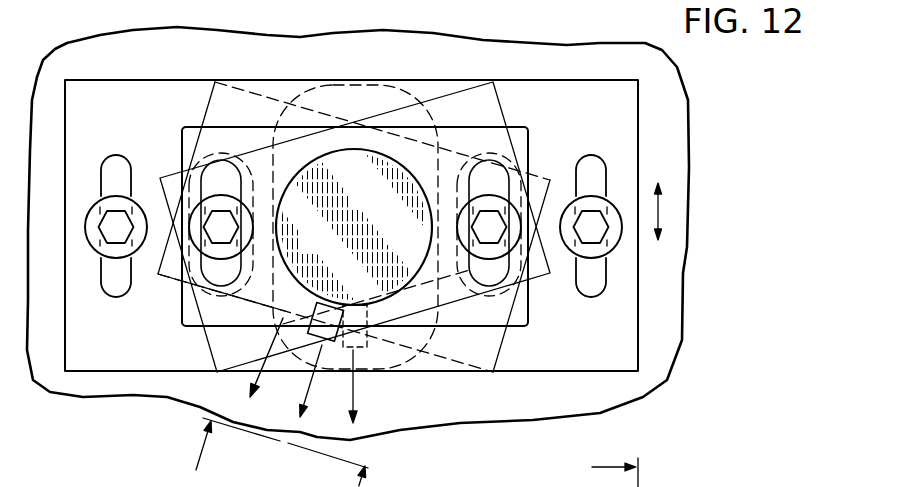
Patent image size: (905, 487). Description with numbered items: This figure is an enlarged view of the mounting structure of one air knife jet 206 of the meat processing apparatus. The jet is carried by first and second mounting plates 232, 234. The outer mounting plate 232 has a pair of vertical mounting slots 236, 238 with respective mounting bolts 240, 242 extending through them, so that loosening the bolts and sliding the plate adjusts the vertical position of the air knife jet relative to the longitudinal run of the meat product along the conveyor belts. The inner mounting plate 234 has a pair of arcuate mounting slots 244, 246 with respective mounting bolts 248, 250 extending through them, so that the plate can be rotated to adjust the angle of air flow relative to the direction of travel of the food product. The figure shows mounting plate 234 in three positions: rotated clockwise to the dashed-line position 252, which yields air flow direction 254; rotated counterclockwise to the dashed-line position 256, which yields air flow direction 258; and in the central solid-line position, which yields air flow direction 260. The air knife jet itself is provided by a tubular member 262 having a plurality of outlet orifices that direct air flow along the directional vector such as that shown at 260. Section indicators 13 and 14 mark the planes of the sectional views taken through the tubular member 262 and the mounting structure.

The adjustable mounting assembly 206 is at (361, 68).
The first mounting plate 232 is at (120, 82).
The second mounting plate 234 is at (182, 133).
The vertical mounting slot 236 is at (106, 172).
The vertical mounting slot 238 is at (590, 168).
The mounting bolt 240 is at (101, 256).
The mounting bolt 242 is at (592, 244).
The arcuate mounting slot 244 is at (238, 184).
The arcuate mounting slot 246 is at (485, 168).
The mounting bolt 248 is at (252, 229).
The mounting bolt 250 is at (470, 226).
The clockwise rotated position 252 is at (255, 93).
The air flow direction 254 is at (250, 390).
The counterclockwise rotated position 256 is at (408, 101).
The air flow direction 258 is at (354, 392).
The air flow direction 260 is at (307, 389).
The tubular member 262 is at (343, 150).
The section line for FIG. 13 is at (275, 452).
The section line for FIG. 14 is at (633, 470).